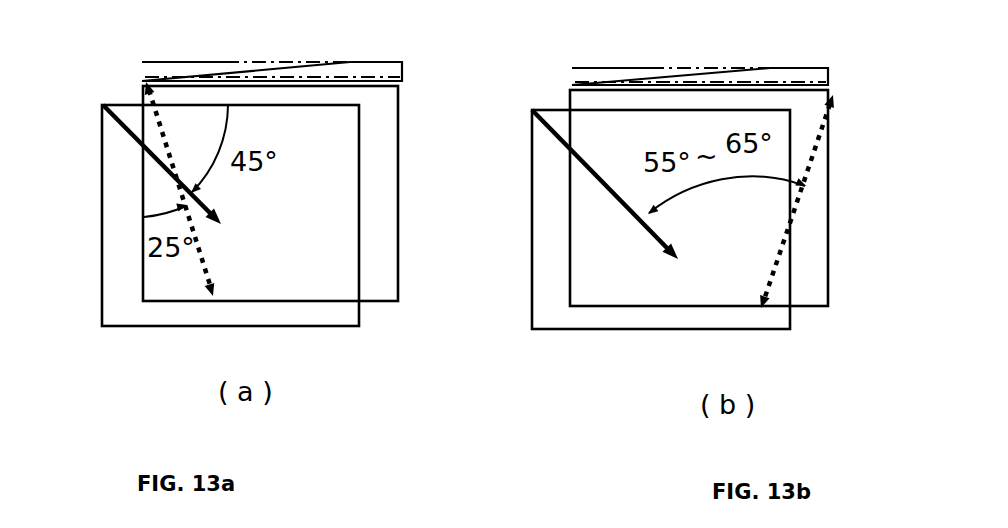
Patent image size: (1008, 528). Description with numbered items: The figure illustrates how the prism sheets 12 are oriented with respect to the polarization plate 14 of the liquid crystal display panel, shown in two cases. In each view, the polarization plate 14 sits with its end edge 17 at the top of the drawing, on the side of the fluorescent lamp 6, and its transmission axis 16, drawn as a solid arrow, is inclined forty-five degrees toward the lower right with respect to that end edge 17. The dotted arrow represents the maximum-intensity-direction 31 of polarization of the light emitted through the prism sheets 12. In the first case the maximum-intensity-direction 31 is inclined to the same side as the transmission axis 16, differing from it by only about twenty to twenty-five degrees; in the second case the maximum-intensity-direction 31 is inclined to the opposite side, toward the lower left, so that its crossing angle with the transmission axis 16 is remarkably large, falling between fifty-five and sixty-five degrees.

In FIG. 13A, the fluorescent lamp 6 is at (214, 62).
In FIG. 13B, the fluorescent lamp 6 is at (646, 67).
In FIG. 13A, the end edge 17 is at (334, 80).
In FIG. 13B, the end edge 17 is at (764, 84).
In FIG. 13A, the prism sheets 12 is at (383, 247).
In FIG. 13B, the prism sheets 12 is at (808, 273).
In FIG. 13A, the polarization plate 14 is at (118, 253).
In FIG. 13B, the polarization plate 14 is at (553, 253).
In FIG. 13A, the transmission axis 16 is at (140, 156).
In FIG. 13B, the transmission axis 16 is at (590, 179).
In FIG. 13A, the maximum-intensity-direction 31 is at (203, 264).
In FIG. 13B, the maximum-intensity-direction 31 is at (808, 158).